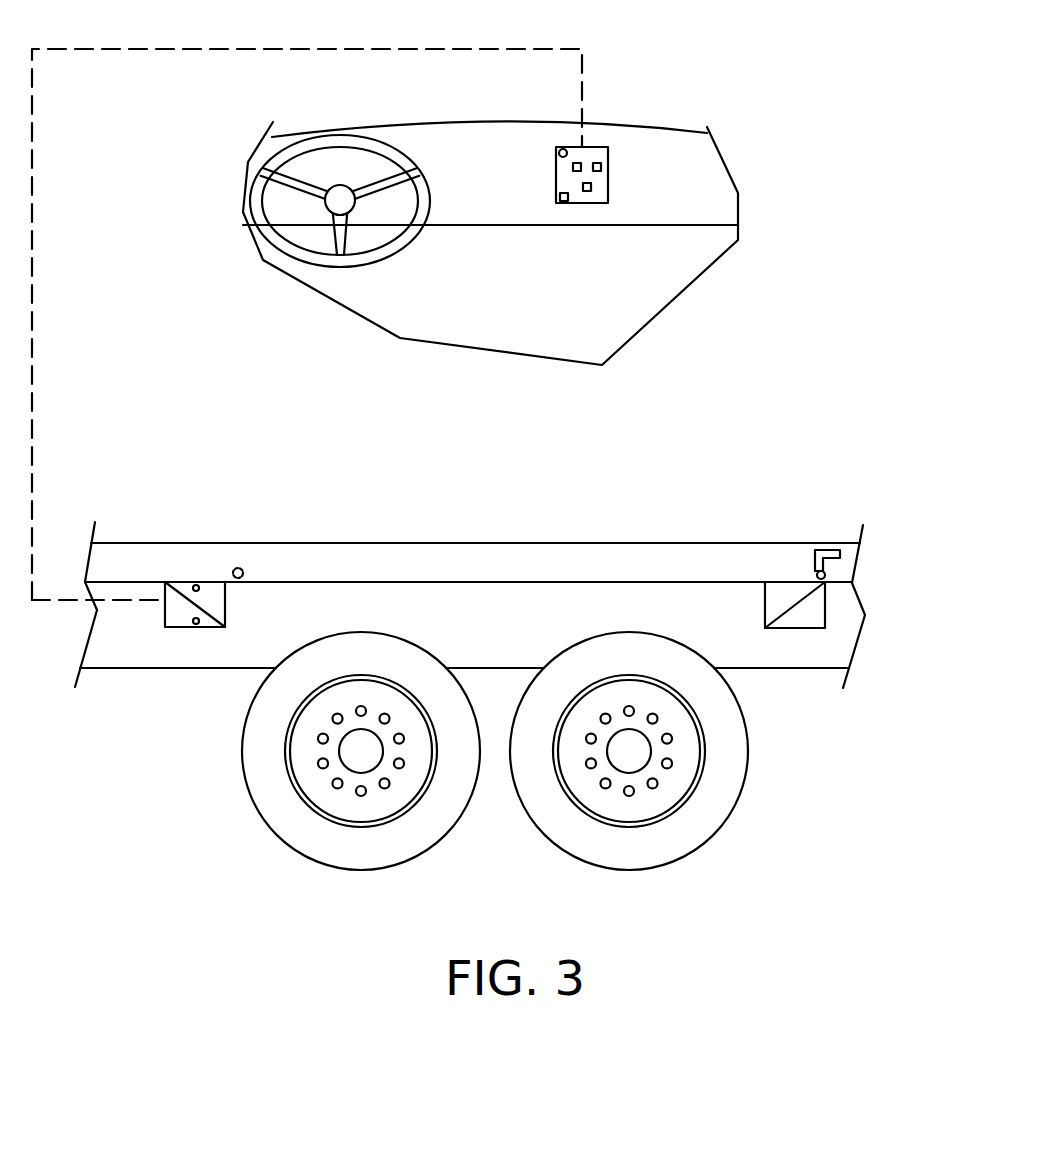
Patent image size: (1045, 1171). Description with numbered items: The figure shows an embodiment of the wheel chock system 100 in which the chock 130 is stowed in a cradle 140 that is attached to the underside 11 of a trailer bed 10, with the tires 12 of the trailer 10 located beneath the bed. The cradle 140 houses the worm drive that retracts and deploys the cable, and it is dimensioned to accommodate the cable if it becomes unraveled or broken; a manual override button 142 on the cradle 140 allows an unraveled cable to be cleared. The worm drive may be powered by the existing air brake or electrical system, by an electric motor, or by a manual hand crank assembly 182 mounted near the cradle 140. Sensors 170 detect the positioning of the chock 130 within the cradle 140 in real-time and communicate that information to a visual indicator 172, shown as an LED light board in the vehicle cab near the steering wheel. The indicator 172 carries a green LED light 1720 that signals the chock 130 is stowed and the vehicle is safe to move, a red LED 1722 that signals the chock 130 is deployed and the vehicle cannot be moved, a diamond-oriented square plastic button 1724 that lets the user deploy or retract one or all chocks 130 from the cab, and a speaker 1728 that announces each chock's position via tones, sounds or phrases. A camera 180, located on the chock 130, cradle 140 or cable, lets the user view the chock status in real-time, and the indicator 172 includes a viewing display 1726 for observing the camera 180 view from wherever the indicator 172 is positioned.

The trailer bed 10 is at (511, 573).
The underside of the trailer 11 is at (152, 542).
The tires 12 is at (465, 787).
The wheel chock system 100 is at (845, 632).
The chock 130 is at (192, 615).
The cradle 140 is at (210, 597).
The manual override button 142 is at (197, 586).
The sensors 170 is at (241, 580).
The visual indicator 172 is at (597, 153).
The camera 180 is at (198, 625).
The manual hand crank assembly 182 is at (835, 550).
The green LED light 1720 is at (575, 171).
The red LED 1722 is at (598, 172).
The button 1724 is at (587, 192).
The viewing display 1726 is at (563, 202).
The speaker 1728 is at (556, 154).